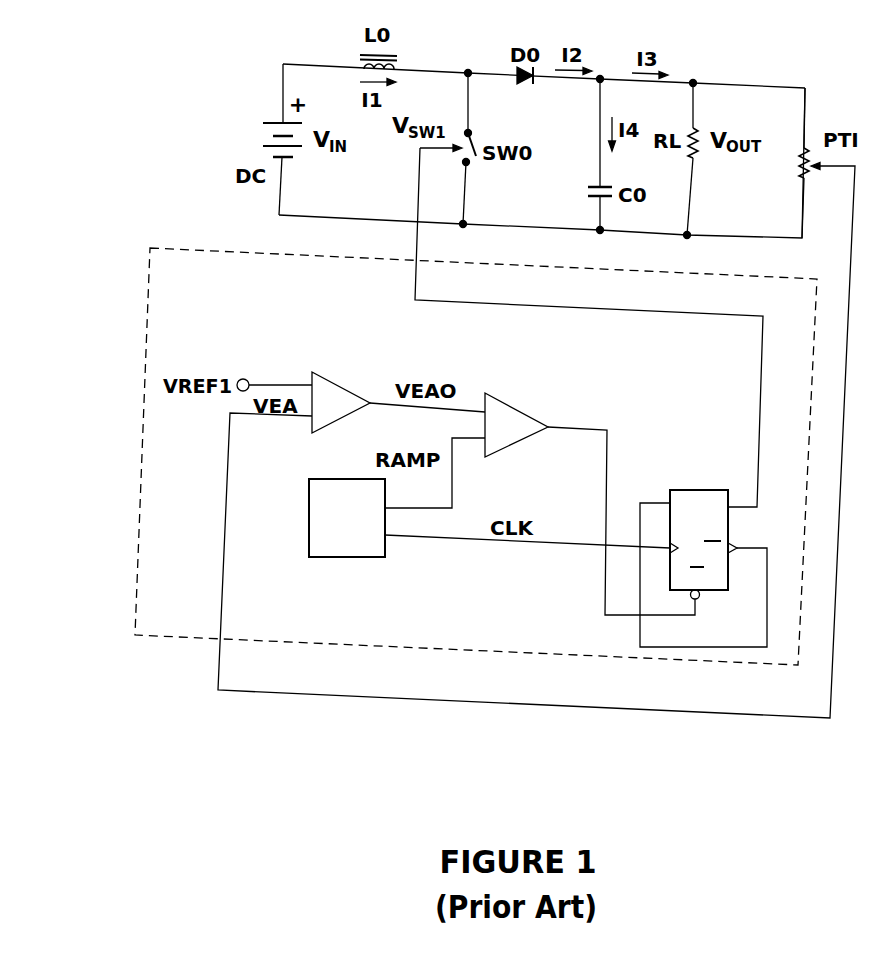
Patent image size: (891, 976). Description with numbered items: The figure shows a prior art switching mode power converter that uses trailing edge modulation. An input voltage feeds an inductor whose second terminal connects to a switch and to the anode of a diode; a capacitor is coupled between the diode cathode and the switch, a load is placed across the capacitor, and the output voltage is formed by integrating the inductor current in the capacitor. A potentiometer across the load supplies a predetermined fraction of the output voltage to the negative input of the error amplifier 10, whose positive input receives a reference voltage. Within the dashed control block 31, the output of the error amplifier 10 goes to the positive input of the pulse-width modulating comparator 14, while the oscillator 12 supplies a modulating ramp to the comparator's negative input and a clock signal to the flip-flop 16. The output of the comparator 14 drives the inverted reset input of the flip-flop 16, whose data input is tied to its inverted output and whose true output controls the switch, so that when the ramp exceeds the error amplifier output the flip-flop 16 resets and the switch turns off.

The control circuit 31 is at (196, 243).
The error amplifier 10 is at (345, 375).
The oscillator 12 is at (298, 514).
The pulse-width modulating comparator 14 is at (512, 450).
The flip-flop 16 is at (697, 482).